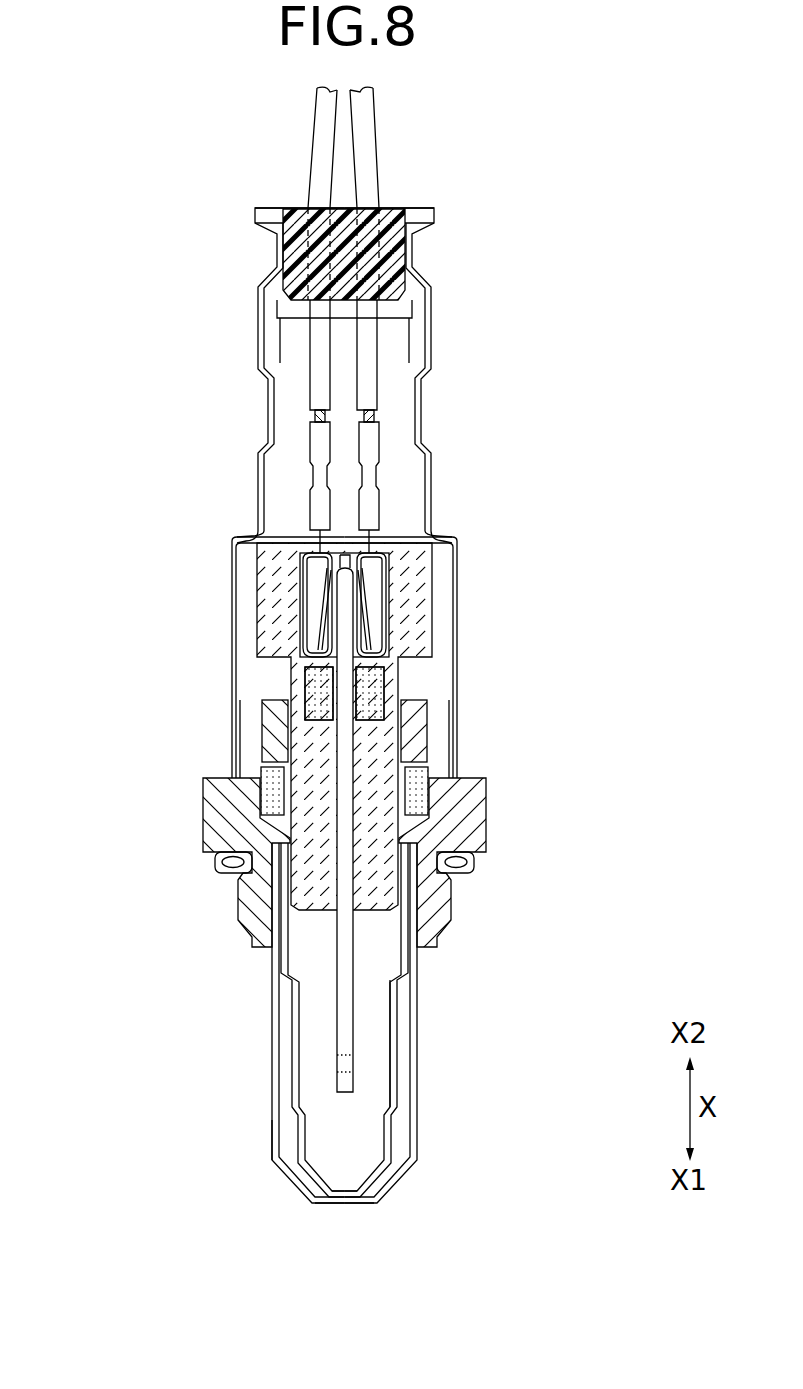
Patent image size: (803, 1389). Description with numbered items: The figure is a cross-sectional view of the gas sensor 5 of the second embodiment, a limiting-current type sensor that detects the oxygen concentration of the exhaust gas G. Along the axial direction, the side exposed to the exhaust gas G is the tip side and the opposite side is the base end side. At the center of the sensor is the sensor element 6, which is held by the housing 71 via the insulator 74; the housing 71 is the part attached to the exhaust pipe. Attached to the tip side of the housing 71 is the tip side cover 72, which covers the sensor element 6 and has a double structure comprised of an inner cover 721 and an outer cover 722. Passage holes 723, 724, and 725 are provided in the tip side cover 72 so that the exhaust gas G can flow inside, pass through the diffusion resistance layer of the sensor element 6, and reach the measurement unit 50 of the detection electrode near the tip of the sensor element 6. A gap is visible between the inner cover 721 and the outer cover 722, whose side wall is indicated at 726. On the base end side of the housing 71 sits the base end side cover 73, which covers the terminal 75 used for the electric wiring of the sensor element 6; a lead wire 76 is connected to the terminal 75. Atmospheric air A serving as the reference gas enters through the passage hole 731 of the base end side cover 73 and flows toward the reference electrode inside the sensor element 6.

The gas sensor 5 is at (316, 692).
The sensor element 6 is at (445, 850).
The measurement unit 50 is at (343, 1063).
The housing 71 is at (228, 812).
The tip side cover 72 is at (290, 1070).
The inner cover 721 is at (319, 1007).
The outer cover 722 is at (275, 1050).
The passage hole 723 is at (343, 1203).
The passage hole 724 is at (363, 1203).
The passage hole 725 is at (273, 1152).
The inner cover side wall portion 726 is at (393, 1012).
The base end side cover 73 is at (430, 489).
The passage hole 731 is at (425, 322).
The insulator 74 is at (383, 833).
The terminal 75 is at (387, 598).
The lead wire 76 is at (320, 372).
The atmospheric air A is at (435, 324).
The exhaust gas G is at (253, 1152).